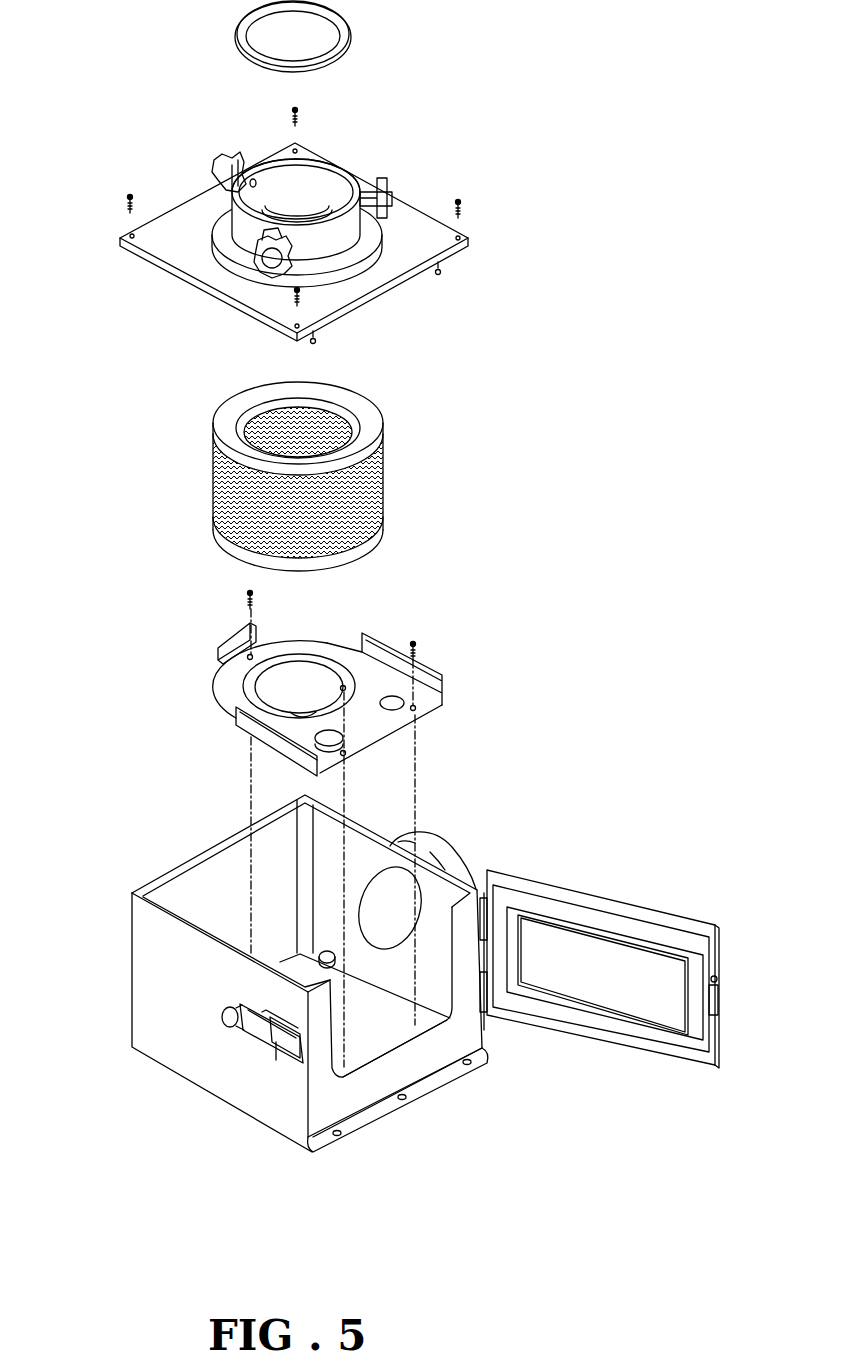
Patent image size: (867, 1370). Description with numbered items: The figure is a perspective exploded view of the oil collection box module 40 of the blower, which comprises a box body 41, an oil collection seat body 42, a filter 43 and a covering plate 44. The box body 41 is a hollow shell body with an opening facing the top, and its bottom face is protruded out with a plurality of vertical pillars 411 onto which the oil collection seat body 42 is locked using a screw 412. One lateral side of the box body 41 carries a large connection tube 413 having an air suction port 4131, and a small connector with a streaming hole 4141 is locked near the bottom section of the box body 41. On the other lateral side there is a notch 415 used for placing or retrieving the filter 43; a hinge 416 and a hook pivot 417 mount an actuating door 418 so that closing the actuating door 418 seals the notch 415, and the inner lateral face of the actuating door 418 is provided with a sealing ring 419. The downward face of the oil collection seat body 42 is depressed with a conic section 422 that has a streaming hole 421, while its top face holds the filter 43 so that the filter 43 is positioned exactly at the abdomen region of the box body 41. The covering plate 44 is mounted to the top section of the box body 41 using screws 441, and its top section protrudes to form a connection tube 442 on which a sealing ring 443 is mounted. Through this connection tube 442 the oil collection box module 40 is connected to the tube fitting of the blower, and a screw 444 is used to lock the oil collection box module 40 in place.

The oil collection box module 40 is at (388, 591).
The box body 41 is at (153, 970).
The vertical pillars 411 is at (482, 1067).
The screw 412 is at (423, 652).
The large connection tube 413 is at (440, 848).
The air suction port 4131 is at (397, 918).
The streaming hole 4141 is at (297, 950).
The notch 415 is at (390, 1057).
The hinge 416 is at (488, 1013).
The hook pivot 417 is at (260, 1037).
The actuating door 418 is at (610, 902).
The sealing ring 419 is at (630, 1037).
The oil collection seat body 42 is at (214, 698).
The streaming hole 421 is at (300, 710).
The conic section 422 is at (290, 695).
The filter 43 is at (217, 477).
The covering plate 44 is at (210, 270).
The screws 441 is at (463, 205).
The connection tube 442 is at (348, 175).
The sealing ring 443 is at (237, 23).
The screw 444 is at (225, 168).